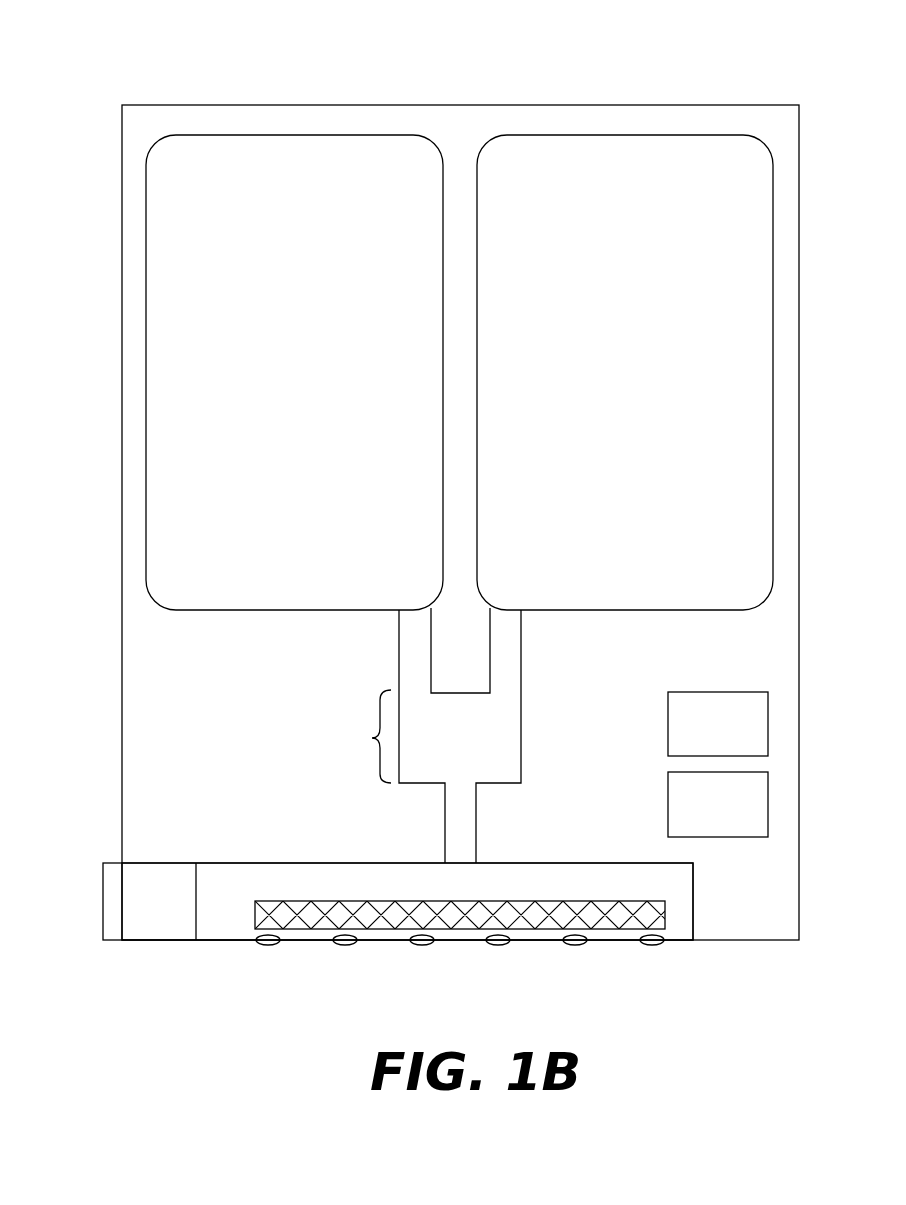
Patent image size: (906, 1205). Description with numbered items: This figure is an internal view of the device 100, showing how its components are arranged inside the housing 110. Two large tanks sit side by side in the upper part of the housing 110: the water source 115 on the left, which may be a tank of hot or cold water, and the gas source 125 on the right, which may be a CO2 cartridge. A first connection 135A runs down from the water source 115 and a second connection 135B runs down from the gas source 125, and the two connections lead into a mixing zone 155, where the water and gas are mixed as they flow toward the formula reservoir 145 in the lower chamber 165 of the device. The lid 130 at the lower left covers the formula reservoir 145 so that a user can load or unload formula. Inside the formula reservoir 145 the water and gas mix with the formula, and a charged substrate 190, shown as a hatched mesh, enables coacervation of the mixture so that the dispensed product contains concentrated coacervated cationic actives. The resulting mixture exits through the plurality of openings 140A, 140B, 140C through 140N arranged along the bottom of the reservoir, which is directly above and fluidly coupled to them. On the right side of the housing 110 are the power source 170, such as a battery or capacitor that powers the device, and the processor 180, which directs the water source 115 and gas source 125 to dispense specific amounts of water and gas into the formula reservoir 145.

The device 100 is at (96, 69).
The housing 110 is at (208, 105).
The water source 115 is at (294, 372).
The gas source 125 is at (625, 372).
The first connection 135A is at (399, 649).
The second connection 135B is at (521, 650).
The mixing zone 155 is at (372, 738).
The lower chamber 165 is at (197, 822).
The lid 130 is at (103, 894).
The formula reservoir 145 is at (238, 914).
The charged substrate 190 is at (531, 926).
The opening 140A is at (268, 946).
The opening 140B is at (345, 946).
The opening 140C is at (422, 946).
The opening 140N is at (652, 946).
The power source 170 is at (718, 724).
The processor 180 is at (718, 804).